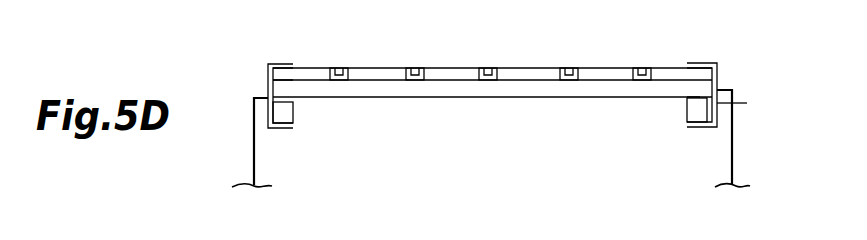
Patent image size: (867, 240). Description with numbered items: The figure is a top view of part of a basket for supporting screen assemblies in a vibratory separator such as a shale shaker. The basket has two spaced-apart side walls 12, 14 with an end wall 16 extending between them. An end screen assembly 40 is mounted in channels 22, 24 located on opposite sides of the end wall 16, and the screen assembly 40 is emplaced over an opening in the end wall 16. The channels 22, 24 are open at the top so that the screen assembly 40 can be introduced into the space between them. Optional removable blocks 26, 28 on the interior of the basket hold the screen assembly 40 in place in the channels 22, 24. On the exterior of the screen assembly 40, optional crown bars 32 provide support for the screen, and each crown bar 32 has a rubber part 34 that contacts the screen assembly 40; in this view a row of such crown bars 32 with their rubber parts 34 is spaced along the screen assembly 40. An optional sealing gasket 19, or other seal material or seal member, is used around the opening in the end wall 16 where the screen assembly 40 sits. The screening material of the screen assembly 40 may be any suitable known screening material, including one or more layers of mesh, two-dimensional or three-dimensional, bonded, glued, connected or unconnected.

The side wall 12 is at (252, 149).
The side wall 14 is at (732, 163).
The end wall 16 is at (722, 88).
The sealing gasket 19 is at (285, 92).
The channel 22 is at (268, 85).
The channel 24 is at (747, 103).
The removable block 26 is at (288, 112).
The removable block 28 is at (697, 124).
The crown bar 32 is at (488, 70).
The rubber part 34 is at (558, 77).
The end screen assembly 40 is at (458, 88).